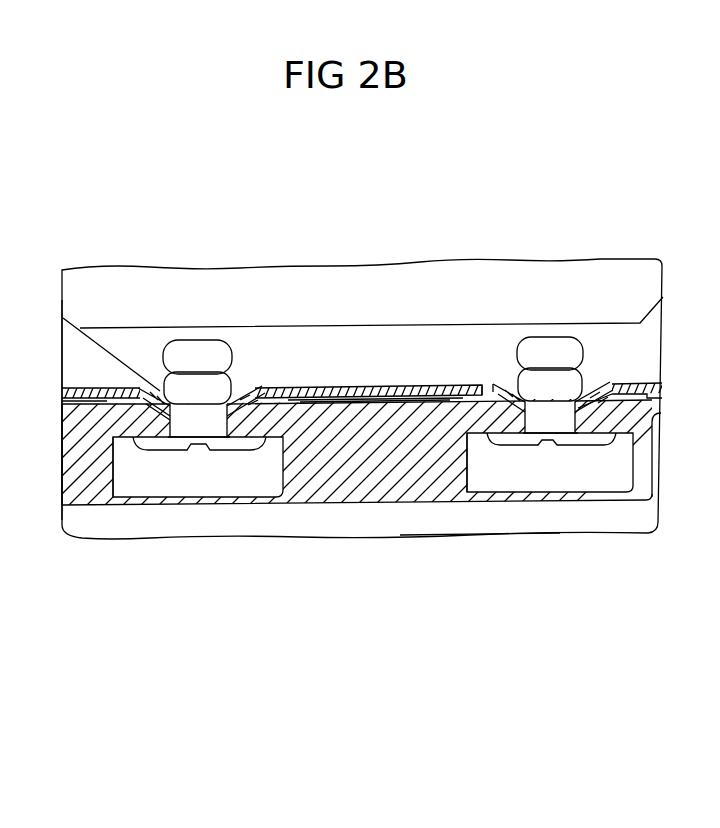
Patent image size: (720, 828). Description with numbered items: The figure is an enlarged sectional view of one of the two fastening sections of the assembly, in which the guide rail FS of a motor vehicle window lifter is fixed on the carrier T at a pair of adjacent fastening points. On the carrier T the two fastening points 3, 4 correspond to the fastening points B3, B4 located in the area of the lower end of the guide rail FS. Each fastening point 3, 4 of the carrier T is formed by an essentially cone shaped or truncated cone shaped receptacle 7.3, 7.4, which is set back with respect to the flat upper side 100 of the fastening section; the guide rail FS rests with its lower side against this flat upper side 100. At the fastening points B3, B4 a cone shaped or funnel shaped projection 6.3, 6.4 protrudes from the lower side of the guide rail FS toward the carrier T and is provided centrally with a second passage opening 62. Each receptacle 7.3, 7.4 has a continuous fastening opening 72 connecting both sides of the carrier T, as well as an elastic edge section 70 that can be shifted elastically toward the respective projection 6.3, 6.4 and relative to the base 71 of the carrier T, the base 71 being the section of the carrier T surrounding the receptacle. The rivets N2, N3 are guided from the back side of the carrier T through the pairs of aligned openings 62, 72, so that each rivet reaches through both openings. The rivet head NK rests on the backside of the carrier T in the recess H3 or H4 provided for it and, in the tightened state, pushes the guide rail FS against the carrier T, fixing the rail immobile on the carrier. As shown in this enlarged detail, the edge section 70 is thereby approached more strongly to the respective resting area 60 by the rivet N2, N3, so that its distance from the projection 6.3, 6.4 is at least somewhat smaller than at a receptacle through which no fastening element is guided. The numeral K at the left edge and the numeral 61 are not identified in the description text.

The flat upper side 100 is at (401, 387).
The fastening point 3 is at (658, 520).
The fastening point 4 is at (118, 463).
The resting area 60 is at (485, 388).
The spacer layer 61 is at (582, 401).
The second passage opening 62 is at (246, 390).
The projection 6.3 is at (596, 388).
The projection 6.4 is at (150, 378).
The elastic edge section 70 is at (257, 400).
The base 71 is at (318, 468).
The fastening opening 72 is at (170, 430).
The receptacle 7.3 is at (495, 428).
The receptacle 7.4 is at (152, 413).
The fastening point B3 is at (590, 343).
The fastening point B4 is at (160, 346).
The recess H3 is at (547, 480).
The recess H4 is at (168, 480).
The rivet N2 is at (544, 303).
The rivet N3 is at (185, 324).
The rivet head NK is at (231, 447).
The guide rail FS is at (420, 404).
The carrier T is at (496, 542).
The contour K is at (31, 410).